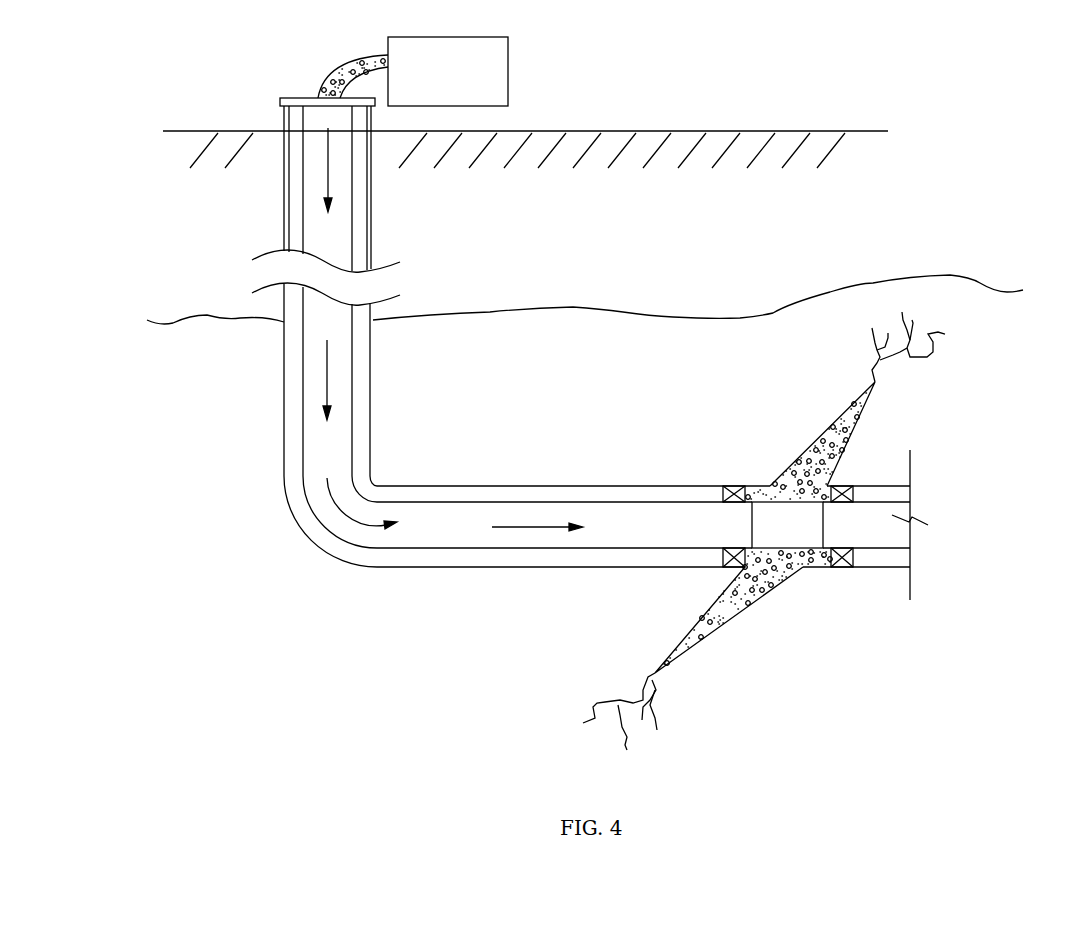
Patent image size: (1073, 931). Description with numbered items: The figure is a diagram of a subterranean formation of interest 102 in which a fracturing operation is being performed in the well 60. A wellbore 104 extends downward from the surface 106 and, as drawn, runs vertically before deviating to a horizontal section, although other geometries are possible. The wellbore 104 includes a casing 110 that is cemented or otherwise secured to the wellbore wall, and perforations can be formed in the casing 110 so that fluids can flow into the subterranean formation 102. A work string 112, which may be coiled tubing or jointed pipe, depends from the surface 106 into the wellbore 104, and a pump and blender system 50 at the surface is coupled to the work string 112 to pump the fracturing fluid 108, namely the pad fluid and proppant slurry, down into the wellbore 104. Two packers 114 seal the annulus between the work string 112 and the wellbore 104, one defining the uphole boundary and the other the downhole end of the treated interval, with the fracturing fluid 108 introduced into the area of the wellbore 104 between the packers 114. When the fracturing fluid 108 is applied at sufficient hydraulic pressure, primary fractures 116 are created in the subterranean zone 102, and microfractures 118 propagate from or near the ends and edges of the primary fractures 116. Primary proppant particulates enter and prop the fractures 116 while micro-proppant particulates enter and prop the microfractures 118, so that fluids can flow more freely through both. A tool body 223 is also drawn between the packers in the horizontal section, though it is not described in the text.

The pump and blender system 50 is at (447, 81).
The well 60 is at (573, 442).
The subterranean formation of interest 102 is at (617, 348).
The wellbore 104 is at (295, 211).
The surface 106 is at (699, 130).
The fracturing fluid 108 is at (338, 74).
The casing 110 is at (288, 240).
The work string 112 is at (303, 418).
The packers 114 is at (735, 486).
The primary fractures 116 is at (806, 433).
The microfractures 118 is at (858, 330).
The downhole tool / sleeve 223 is at (805, 534).